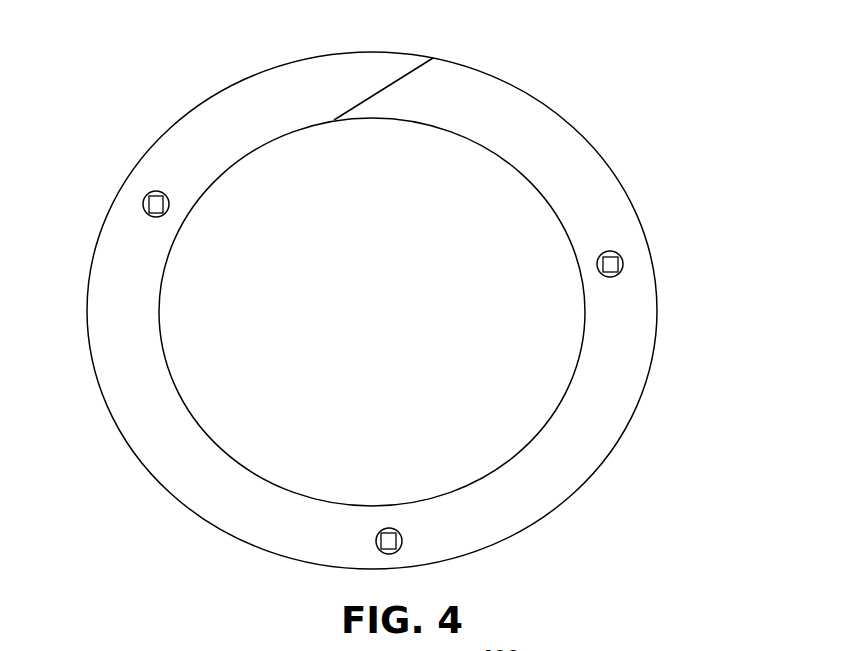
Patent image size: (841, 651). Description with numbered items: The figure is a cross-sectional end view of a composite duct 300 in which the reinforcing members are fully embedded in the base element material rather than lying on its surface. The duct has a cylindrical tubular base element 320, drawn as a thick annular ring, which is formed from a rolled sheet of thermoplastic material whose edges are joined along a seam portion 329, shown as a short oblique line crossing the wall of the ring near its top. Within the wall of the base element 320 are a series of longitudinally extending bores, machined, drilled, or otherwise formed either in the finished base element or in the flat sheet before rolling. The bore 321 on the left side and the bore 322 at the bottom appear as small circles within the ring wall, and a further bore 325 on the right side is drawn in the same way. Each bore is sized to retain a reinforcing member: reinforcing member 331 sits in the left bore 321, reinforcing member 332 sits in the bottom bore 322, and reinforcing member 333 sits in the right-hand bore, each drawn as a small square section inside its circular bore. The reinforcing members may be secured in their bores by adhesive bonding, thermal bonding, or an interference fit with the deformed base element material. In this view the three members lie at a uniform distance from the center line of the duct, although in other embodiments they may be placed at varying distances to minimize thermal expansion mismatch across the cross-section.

The composite duct 300 is at (385, 308).
The cylindrical tubular base element 320 is at (620, 180).
The seam portion 329 is at (437, 49).
The longitudinal bore 321 is at (153, 215).
The reinforcing member 331 is at (157, 196).
The sensor housing 325 is at (623, 257).
The reinforcing member 333 is at (613, 273).
The longitudinal bore 322 is at (402, 541).
The reinforcing member 332 is at (381, 541).